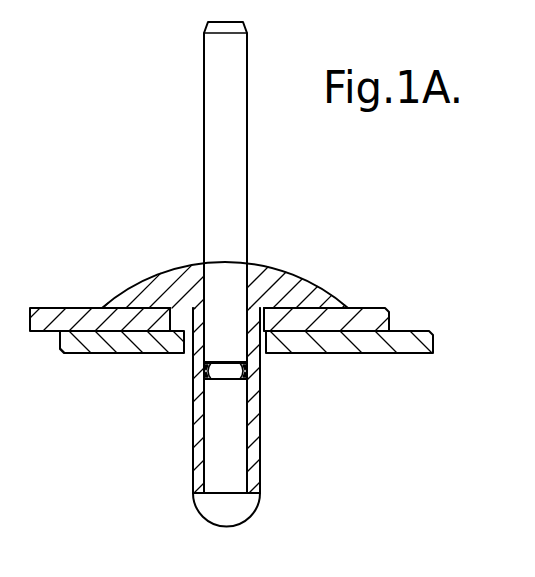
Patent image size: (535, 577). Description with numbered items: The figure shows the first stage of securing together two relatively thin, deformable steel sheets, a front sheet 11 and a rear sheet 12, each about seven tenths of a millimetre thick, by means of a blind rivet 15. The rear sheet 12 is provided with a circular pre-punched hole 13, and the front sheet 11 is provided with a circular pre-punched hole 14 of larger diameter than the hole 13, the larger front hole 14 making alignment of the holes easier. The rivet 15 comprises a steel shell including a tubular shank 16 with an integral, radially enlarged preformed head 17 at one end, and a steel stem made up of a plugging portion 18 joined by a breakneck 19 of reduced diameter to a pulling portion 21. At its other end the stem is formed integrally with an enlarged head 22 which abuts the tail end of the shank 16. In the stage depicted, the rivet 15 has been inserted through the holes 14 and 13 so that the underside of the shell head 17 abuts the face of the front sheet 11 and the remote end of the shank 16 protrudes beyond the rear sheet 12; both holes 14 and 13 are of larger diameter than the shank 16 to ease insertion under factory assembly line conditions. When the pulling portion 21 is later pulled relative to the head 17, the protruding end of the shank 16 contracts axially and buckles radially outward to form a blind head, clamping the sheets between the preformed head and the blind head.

The front sheet 11 is at (385, 316).
The rear sheet 12 is at (430, 348).
The pre-punched hole in rear sheet 13 is at (268, 356).
The pre-punched hole in front sheet 14 is at (278, 308).
The blind rivet 15 is at (264, 238).
The tubular shank 16 is at (256, 452).
The preformed head 17 is at (323, 295).
The plugging portion 18 is at (222, 420).
The breakneck 19 is at (208, 374).
The pulling portion 21 is at (210, 196).
The enlarged head of stem 22 is at (206, 490).